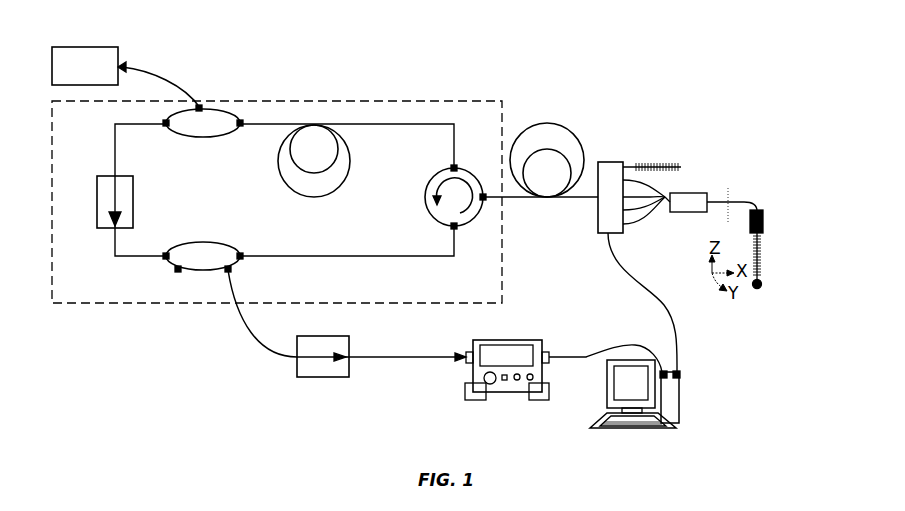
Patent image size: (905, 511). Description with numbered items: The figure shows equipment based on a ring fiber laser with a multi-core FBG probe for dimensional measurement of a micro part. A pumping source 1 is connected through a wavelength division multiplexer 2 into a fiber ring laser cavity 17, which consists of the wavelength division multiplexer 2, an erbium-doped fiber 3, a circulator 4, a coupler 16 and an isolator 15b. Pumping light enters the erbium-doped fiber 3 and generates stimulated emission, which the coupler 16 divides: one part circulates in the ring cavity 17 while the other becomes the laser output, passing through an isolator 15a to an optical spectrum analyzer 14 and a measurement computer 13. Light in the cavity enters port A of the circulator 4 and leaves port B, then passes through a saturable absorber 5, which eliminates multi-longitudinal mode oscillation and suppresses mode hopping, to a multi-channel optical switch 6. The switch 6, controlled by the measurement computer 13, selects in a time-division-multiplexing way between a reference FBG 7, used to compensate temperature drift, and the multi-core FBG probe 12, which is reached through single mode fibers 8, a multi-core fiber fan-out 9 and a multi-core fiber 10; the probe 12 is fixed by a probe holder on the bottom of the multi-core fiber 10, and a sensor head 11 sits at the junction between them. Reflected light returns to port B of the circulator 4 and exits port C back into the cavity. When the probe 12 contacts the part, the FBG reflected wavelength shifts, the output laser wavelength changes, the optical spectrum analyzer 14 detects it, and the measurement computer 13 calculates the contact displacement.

The pumping source 1 is at (95, 46).
The wavelength division multiplexer 2 is at (203, 108).
The erbium-doped fiber 3 is at (314, 123).
The circulator 4 is at (467, 172).
The saturable absorber 5 is at (545, 123).
The multi-channel optical switch 6 is at (609, 161).
The reference FBG 7 is at (648, 165).
The single mode fibers 8 is at (662, 182).
The multi-core fiber fan-out 9 is at (697, 191).
The multi-core fiber 10 is at (736, 200).
The sensor head 11 is at (764, 222).
The multi-core FBG probe 12 is at (764, 258).
The measurement computer 13 is at (690, 389).
The optical spectrum analyzer 14 is at (512, 357).
The isolator 15a is at (322, 378).
The isolator 15b is at (97, 196).
The coupler 16 is at (203, 242).
The ring cavity 17 is at (421, 100).